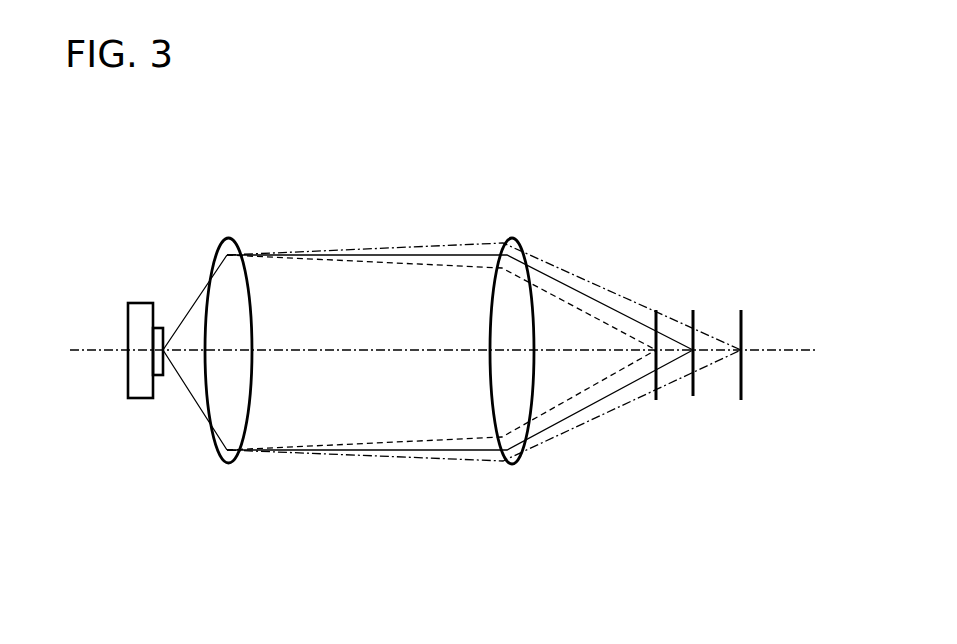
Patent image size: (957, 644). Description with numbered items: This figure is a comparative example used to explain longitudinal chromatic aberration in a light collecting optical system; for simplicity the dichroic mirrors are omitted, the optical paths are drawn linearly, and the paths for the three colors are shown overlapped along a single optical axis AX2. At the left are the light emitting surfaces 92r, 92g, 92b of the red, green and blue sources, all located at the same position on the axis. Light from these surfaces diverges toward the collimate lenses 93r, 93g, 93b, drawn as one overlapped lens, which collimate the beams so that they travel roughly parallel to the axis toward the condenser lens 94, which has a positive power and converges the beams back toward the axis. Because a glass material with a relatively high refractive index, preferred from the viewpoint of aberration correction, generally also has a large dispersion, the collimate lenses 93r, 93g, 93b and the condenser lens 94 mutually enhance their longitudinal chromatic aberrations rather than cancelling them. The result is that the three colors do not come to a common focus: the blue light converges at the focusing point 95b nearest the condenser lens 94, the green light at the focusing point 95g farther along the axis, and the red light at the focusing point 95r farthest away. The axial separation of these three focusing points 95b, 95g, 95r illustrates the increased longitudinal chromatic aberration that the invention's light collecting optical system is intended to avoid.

The optical axis AX2 is at (81, 350).
The light emitting surface (red) 92r is at (183, 407).
The light emitting surface (green) 92g is at (145, 350).
The light emitting surface (blue) 92b is at (165, 377).
The collimate lens (red) 93r is at (254, 276).
The collimate lens (green) 93g is at (228, 350).
The collimate lens (blue) 93b is at (228, 237).
The condenser lens 94 is at (513, 237).
The focusing point (blue) 95b is at (656, 400).
The focusing point (green) 95g is at (693, 398).
The focusing point (red) 95r is at (741, 400).